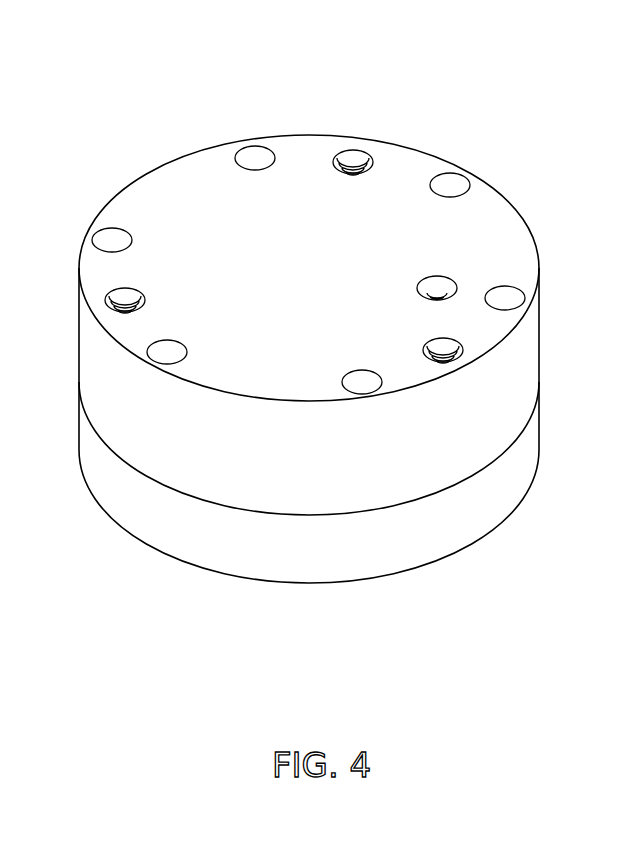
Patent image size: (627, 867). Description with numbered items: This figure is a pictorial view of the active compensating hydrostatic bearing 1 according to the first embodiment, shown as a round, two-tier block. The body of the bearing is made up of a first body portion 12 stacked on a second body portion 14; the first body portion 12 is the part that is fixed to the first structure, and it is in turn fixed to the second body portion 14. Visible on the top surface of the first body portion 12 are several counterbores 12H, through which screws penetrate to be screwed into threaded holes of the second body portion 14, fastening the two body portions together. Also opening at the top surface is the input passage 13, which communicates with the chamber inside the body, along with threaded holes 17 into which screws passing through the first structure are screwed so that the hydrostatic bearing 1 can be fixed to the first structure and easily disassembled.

The active compensating hydrostatic bearing 1 is at (352, 310).
The first body portion 12 is at (535, 362).
The counterbore 12H is at (110, 237).
The input passage 13 is at (442, 283).
The second body portion 14 is at (535, 442).
The threaded hole 17 is at (353, 160).